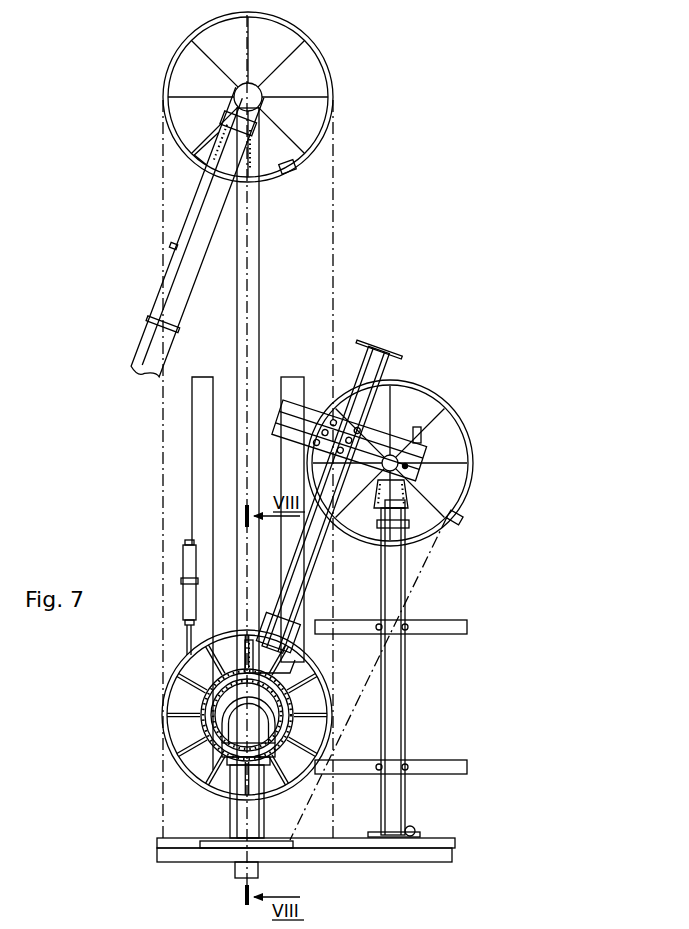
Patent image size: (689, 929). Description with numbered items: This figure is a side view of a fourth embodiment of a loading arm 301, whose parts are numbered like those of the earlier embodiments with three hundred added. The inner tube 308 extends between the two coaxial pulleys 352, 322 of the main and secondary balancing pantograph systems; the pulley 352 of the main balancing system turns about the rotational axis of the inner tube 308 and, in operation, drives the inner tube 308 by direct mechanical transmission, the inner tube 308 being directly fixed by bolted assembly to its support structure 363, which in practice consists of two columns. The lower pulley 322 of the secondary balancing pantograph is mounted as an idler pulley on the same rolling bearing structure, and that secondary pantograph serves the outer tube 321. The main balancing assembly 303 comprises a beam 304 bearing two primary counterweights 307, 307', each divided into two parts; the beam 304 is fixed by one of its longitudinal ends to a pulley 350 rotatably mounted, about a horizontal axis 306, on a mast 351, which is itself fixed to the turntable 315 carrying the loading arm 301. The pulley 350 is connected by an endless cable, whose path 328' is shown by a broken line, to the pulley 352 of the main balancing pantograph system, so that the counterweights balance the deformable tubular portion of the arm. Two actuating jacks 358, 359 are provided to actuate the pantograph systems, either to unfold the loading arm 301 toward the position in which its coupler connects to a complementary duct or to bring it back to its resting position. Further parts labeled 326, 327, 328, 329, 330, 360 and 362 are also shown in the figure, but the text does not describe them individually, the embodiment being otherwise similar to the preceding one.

The loading arm 301 is at (460, 213).
The main balancing assembly 303 is at (488, 565).
The beam 304 is at (405, 690).
The horizontal axis 306 is at (425, 441).
The primary counterweight 307 is at (431, 752).
The primary counterweight 307' is at (434, 614).
The inner tube 308 is at (260, 240).
The turntable 315 is at (455, 853).
The outer tube 321 is at (172, 254).
The lower pulley 322 is at (180, 770).
The lower arm 326 is at (379, 348).
The second wheel hub 327 is at (392, 452).
The axis line 328 is at (126, 470).
The cable path 328' is at (417, 674).
The upper wheel 329 is at (255, 97).
The upper wheel rim 330 is at (195, 123).
The pulley 350 is at (418, 443).
The mast 351 is at (414, 832).
The pulley of the main balancing system 352 is at (212, 715).
The actuating jack 358 is at (185, 590).
The actuating jack 359 is at (407, 467).
The mast sleeve 360 is at (228, 818).
The lower block 362 is at (255, 877).
The support structure 363 is at (186, 418).